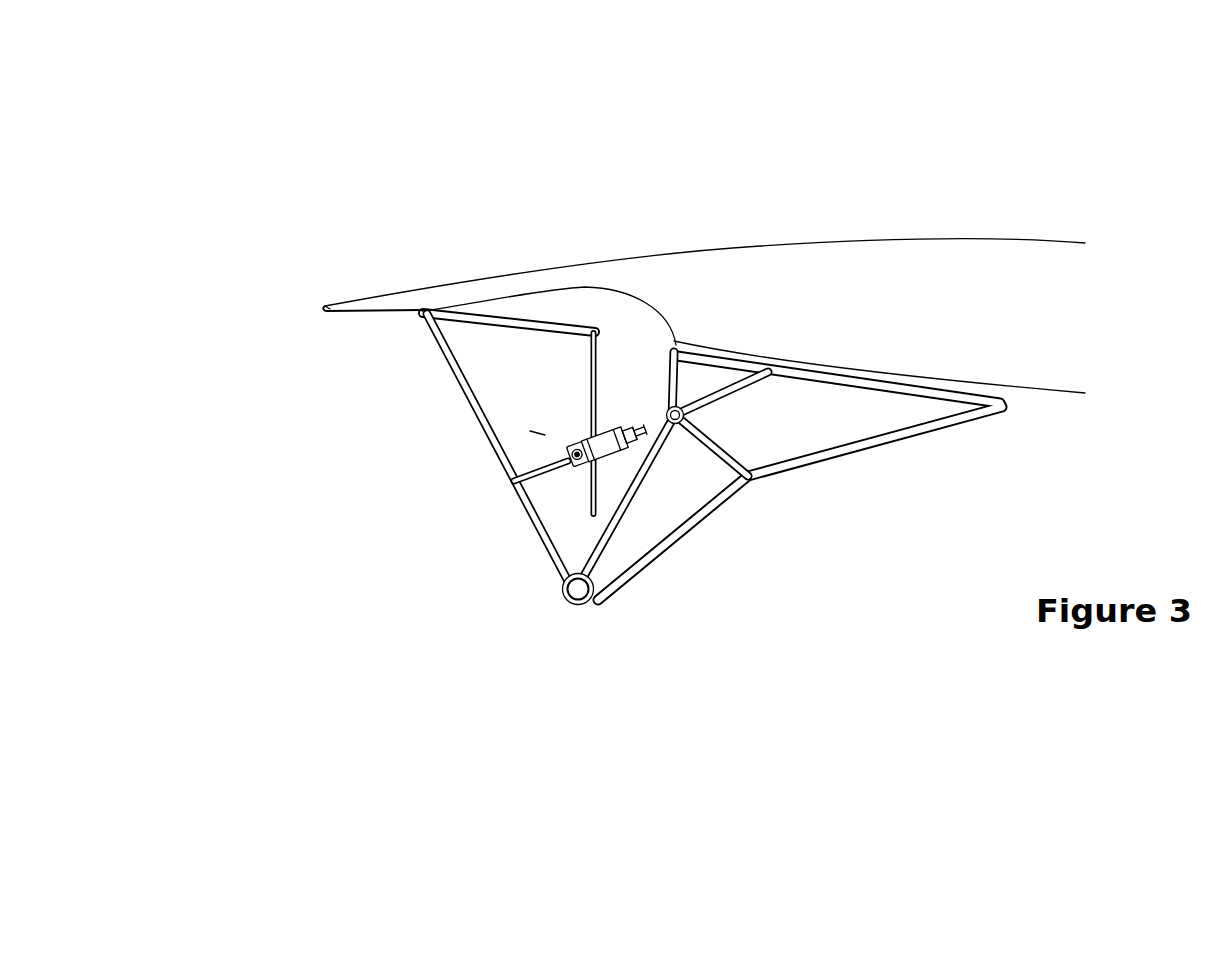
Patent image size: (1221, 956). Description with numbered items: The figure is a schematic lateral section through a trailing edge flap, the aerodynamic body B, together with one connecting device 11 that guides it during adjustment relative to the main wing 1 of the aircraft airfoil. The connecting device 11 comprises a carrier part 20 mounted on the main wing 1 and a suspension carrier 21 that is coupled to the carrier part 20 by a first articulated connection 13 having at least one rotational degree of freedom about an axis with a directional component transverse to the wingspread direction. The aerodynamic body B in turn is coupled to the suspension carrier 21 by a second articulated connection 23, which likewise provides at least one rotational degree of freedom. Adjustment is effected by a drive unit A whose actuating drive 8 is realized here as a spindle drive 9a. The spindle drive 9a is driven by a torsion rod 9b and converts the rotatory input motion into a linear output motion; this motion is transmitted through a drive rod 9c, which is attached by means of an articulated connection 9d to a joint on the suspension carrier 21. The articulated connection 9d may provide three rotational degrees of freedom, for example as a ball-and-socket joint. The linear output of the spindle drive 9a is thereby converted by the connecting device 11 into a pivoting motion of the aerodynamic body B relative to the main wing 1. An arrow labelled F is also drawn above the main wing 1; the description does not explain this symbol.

The main wing 1 is at (960, 282).
The actuating drive 8 is at (646, 355).
The spindle drive 9a is at (598, 436).
The torsion rod 9b is at (606, 458).
The drive rod 9c is at (592, 458).
The articulated connection 9d is at (577, 468).
The connecting device 11 is at (373, 522).
The first articulated connection 13 is at (405, 328).
The carrier part 20 is at (906, 443).
The suspension carrier 21 is at (535, 433).
The second articulated connection 23 is at (548, 617).
The drive unit A is at (525, 429).
The aerodynamic body B is at (417, 300).
The flow direction F is at (906, 172).